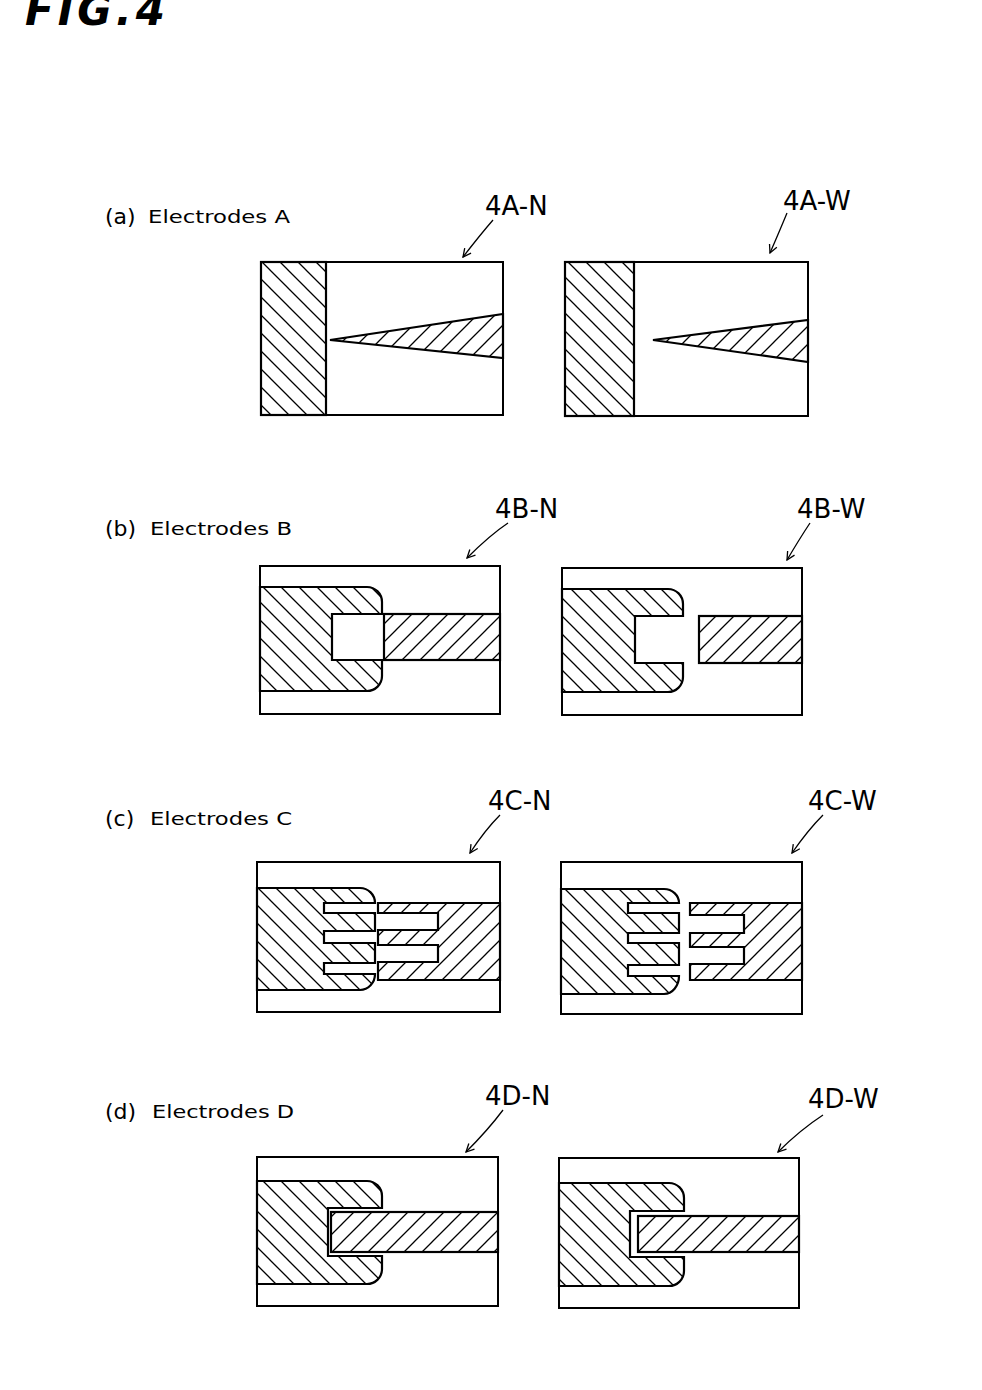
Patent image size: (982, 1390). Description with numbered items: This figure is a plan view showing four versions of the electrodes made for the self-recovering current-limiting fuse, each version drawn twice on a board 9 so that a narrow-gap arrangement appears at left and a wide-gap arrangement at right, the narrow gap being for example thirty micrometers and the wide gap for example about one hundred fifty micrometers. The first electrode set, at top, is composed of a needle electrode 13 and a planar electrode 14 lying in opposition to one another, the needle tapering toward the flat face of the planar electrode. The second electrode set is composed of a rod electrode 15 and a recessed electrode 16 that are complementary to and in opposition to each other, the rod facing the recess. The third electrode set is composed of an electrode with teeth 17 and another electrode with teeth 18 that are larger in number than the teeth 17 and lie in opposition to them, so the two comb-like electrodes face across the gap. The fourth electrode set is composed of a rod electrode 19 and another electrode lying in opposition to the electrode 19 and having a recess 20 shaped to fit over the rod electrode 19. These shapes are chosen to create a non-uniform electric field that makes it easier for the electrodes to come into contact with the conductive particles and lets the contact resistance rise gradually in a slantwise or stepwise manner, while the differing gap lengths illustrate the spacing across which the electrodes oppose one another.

The substrate 9 is at (353, 260).
The needle electrode 13 is at (391, 335).
The planar electrode 14 is at (282, 336).
The rod electrode 15 is at (415, 636).
The recessed electrode 16 is at (357, 598).
The electrode with teeth 17 is at (413, 905).
The electrode with teeth 18 is at (355, 893).
The rod electrode 19 is at (392, 1225).
The recess 20 is at (367, 1195).